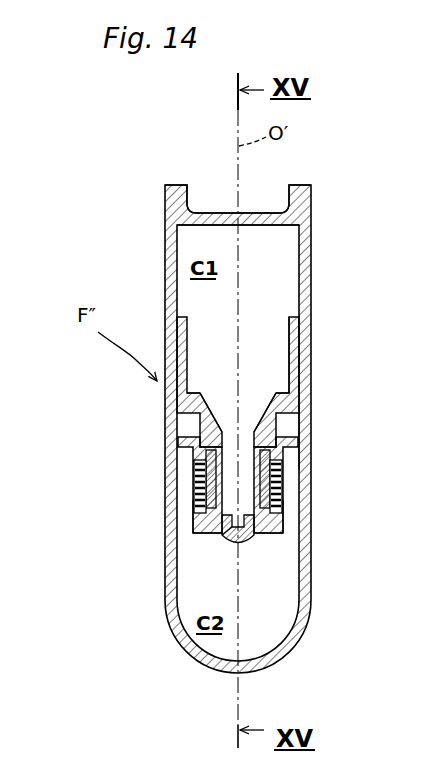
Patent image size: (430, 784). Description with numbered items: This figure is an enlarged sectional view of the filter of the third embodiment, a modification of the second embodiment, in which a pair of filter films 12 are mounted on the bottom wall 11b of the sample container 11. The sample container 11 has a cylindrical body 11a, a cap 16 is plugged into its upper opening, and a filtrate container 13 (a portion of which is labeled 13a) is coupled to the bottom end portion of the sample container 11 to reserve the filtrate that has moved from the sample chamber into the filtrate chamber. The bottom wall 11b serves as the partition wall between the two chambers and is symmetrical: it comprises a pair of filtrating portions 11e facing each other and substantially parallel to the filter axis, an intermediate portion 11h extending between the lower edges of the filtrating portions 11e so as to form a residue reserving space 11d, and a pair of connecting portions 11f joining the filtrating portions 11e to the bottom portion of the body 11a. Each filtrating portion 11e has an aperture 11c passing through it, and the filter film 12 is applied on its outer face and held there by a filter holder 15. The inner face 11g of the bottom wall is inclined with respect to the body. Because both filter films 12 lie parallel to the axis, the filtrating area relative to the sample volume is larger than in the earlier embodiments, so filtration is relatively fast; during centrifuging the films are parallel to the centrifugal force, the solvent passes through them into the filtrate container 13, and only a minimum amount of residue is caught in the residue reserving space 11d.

The sample container 11 is at (313, 253).
The cylindrical body 11a is at (296, 337).
The bottom wall 11b is at (215, 540).
The aperture 11c is at (252, 497).
The residue reserving space 11d is at (226, 542).
The filtrating portion 11e is at (252, 537).
The connecting portion 11f is at (272, 382).
The inner face 11g is at (265, 420).
The intermediate portion 11h is at (250, 538).
The filter film 12 is at (290, 447).
The filtrate container 13 is at (314, 533).
The casing inner wall 13a is at (262, 462).
The filter holder 15 is at (278, 479).
The cap 16 is at (268, 213).